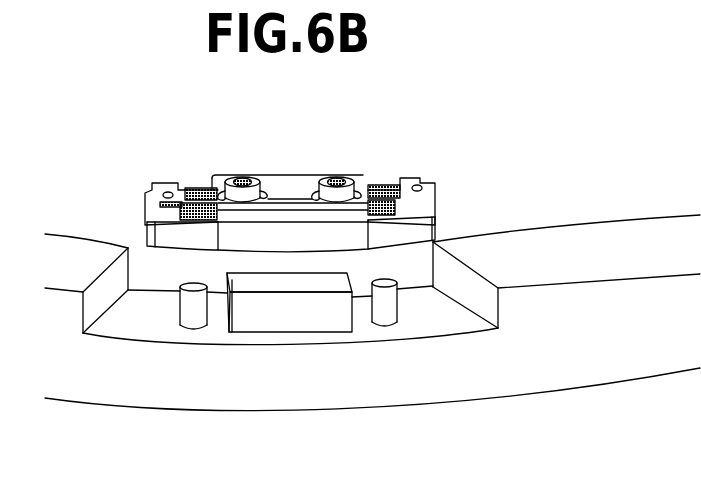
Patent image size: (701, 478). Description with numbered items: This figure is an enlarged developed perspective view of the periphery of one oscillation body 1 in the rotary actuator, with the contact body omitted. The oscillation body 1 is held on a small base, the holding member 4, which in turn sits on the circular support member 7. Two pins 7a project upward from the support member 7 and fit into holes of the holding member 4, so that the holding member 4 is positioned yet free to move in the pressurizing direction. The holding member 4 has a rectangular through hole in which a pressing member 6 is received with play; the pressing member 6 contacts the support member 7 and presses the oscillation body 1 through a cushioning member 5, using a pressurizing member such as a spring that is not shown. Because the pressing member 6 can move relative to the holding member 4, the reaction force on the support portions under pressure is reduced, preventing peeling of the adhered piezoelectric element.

The oscillation body 1 is at (260, 164).
The holding member 4 is at (147, 230).
The cushioning member 5 is at (260, 282).
The pressing member 6 is at (312, 315).
The support member 7 is at (122, 382).
The pins 7a is at (195, 316).